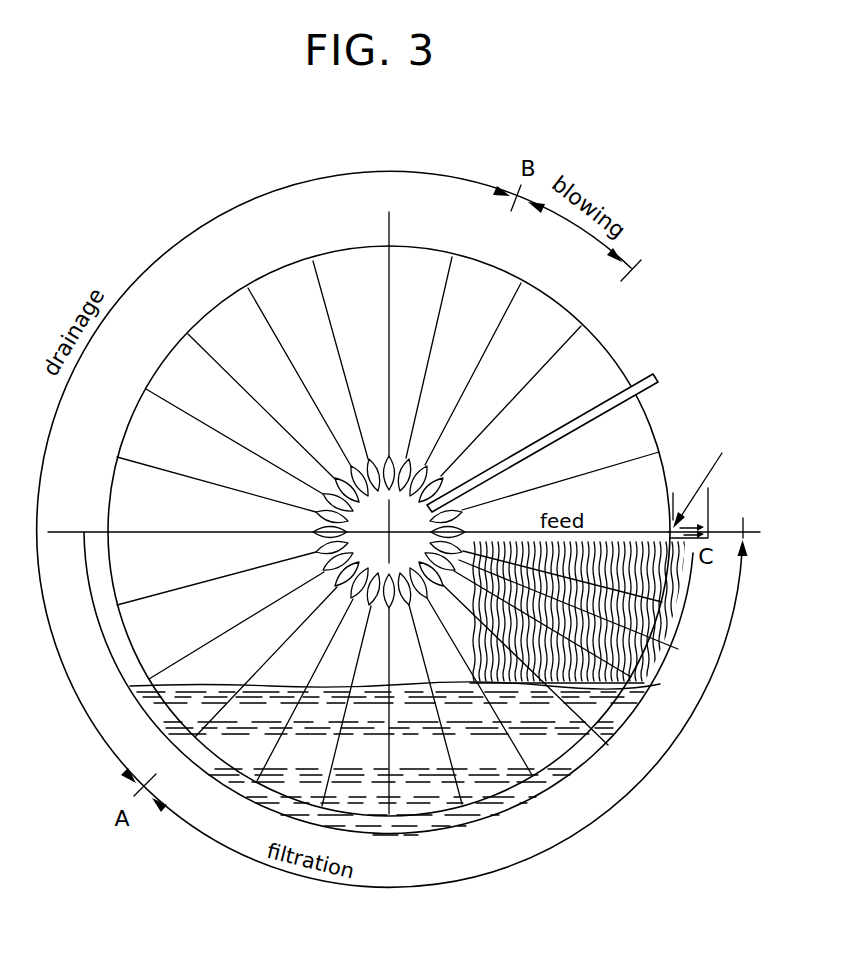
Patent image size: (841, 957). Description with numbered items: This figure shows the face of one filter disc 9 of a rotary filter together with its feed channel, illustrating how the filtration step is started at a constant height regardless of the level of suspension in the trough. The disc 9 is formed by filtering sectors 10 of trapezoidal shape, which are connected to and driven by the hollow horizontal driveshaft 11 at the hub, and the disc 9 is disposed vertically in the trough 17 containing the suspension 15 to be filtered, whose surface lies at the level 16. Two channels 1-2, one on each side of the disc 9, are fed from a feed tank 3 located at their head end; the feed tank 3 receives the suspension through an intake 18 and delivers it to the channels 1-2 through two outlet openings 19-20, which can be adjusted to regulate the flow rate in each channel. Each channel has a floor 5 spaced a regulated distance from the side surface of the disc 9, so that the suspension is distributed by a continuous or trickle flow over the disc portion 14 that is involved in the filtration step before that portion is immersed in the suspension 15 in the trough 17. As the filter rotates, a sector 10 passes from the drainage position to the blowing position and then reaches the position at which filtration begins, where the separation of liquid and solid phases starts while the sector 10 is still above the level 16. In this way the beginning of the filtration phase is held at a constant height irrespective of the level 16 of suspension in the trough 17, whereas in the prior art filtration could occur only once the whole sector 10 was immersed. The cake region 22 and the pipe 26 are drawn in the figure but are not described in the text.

The channels 1-2 is at (528, 531).
The feed tank 3 is at (712, 500).
The floor 5 is at (625, 584).
The disc 9 is at (345, 246).
The filtering sectors 10 is at (432, 246).
The hollow shaft 11 is at (372, 456).
The disc portion 14 is at (608, 745).
The suspension 15 is at (452, 694).
The level 16 is at (408, 688).
The trough 17 is at (548, 790).
The intake 18 is at (700, 472).
The outlet openings 19-20 is at (663, 521).
The filter cake 22 is at (583, 612).
The blow-back pipe 26 is at (567, 420).